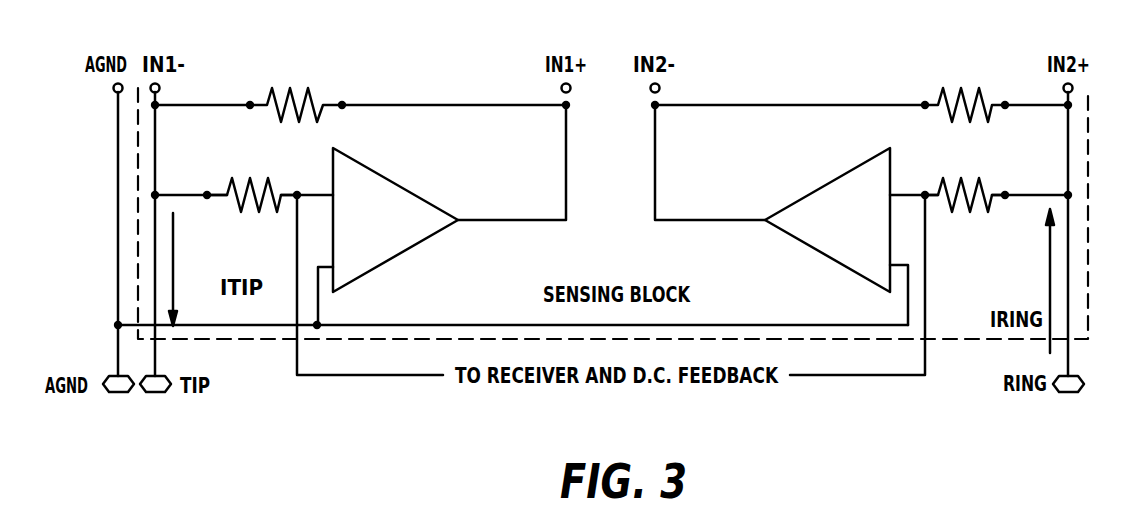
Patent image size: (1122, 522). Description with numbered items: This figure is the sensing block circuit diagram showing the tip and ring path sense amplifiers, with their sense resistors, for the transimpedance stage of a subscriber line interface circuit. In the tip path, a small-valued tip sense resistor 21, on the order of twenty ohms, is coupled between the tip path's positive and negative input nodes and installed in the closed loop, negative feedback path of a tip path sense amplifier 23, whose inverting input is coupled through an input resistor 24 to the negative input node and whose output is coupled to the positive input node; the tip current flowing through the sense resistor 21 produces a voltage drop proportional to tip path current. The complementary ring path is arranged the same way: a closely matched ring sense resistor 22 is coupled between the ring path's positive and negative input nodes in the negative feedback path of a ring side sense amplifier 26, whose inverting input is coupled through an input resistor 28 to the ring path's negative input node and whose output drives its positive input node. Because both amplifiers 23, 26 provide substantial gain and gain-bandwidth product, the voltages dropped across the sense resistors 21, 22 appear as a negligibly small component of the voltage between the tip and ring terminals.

The tip sense resistor 21 is at (307, 88).
The ring sense resistor 22 is at (961, 88).
The tip path sense amplifier 23 is at (397, 184).
The input resistor 24 is at (266, 212).
The ring side sense amplifier 26 is at (833, 182).
The input resistor 28 is at (970, 212).